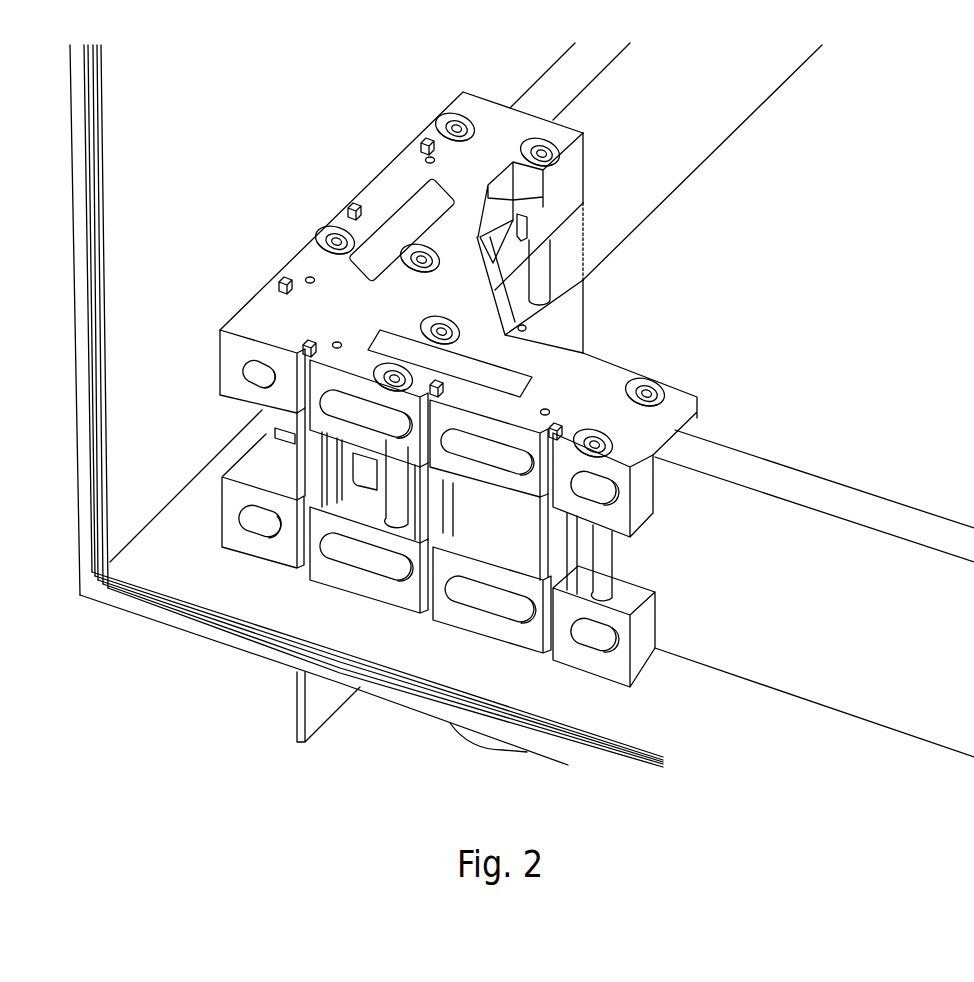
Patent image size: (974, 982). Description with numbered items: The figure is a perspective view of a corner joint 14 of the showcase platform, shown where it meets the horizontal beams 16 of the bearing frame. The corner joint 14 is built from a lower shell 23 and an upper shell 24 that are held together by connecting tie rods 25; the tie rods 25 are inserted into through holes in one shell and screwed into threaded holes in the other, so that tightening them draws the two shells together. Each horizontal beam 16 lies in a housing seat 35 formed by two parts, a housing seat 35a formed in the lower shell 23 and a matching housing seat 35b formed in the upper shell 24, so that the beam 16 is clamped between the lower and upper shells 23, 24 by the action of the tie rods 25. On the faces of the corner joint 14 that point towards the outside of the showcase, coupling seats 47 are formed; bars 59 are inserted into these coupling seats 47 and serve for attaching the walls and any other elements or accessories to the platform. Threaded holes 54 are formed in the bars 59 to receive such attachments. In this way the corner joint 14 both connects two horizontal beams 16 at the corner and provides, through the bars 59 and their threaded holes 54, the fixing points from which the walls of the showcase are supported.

The corner joint 14 is at (596, 146).
The horizontal beam 16 is at (653, 177).
The lower shell 23 is at (655, 624).
The upper shell 24 is at (683, 385).
The connecting tie rod 25 is at (632, 594).
The housing seat 35 is at (700, 442).
The housing seat 35a is at (672, 447).
The housing seat 35b is at (655, 644).
The coupling seat 47 is at (353, 207).
The threaded hole 54 is at (248, 347).
The bar 59 is at (300, 486).